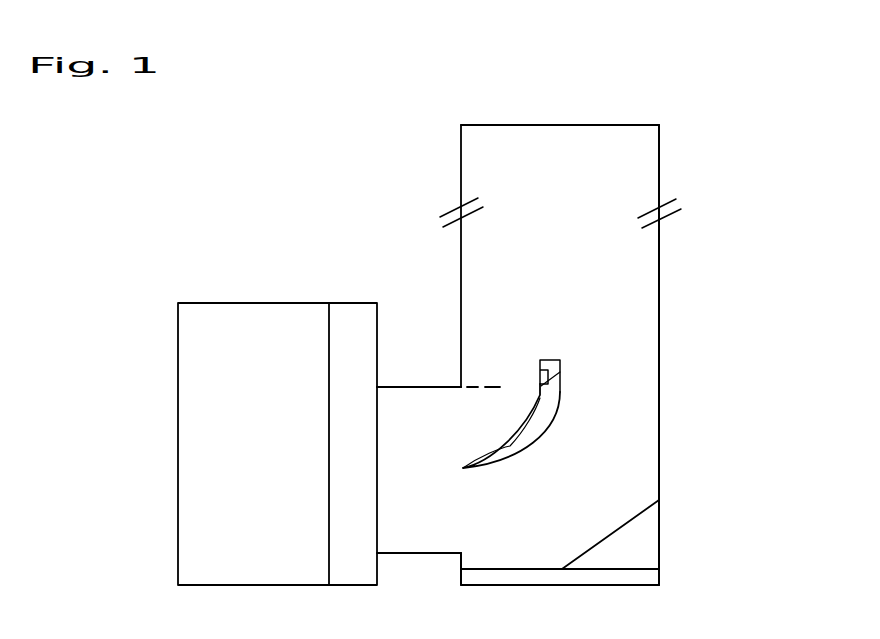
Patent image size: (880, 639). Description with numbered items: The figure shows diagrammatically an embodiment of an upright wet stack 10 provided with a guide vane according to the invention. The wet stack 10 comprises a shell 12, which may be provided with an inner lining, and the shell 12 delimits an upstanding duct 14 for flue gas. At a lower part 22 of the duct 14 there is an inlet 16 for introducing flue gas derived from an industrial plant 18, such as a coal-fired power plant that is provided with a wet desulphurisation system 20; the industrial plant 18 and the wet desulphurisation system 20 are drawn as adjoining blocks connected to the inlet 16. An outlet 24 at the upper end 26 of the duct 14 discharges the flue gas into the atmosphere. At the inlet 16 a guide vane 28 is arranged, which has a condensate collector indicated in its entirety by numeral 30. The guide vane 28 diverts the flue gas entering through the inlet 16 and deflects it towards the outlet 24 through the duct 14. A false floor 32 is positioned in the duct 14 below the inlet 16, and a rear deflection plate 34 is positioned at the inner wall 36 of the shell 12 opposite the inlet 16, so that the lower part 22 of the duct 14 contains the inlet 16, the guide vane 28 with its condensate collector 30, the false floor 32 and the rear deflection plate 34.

The wet stack 10 is at (440, 185).
The shell 12 is at (660, 282).
The duct 14 is at (575, 277).
The inlet 16 is at (415, 387).
The industrial plant 18 is at (234, 303).
The wet desulphurisation system 20 is at (349, 303).
The lower part 22 is at (765, 339).
The outlet 24 is at (563, 125).
The upper end 26 is at (660, 128).
The guide vane 28 is at (508, 448).
The condensate collector 30 is at (567, 373).
The false floor 32 is at (520, 569).
The rear deflection plate 34 is at (637, 518).
The inner wall 36 is at (658, 466).